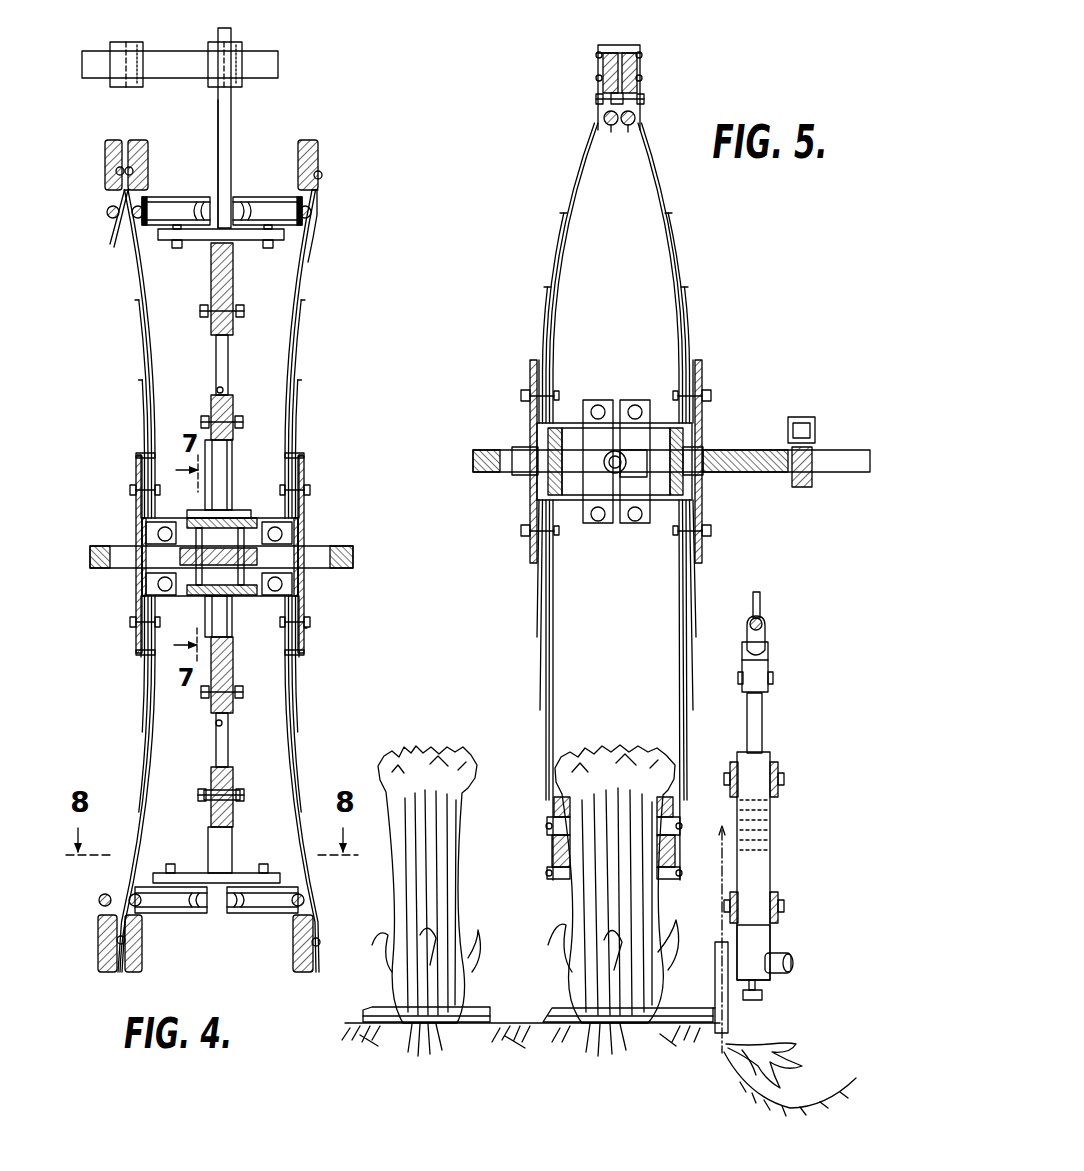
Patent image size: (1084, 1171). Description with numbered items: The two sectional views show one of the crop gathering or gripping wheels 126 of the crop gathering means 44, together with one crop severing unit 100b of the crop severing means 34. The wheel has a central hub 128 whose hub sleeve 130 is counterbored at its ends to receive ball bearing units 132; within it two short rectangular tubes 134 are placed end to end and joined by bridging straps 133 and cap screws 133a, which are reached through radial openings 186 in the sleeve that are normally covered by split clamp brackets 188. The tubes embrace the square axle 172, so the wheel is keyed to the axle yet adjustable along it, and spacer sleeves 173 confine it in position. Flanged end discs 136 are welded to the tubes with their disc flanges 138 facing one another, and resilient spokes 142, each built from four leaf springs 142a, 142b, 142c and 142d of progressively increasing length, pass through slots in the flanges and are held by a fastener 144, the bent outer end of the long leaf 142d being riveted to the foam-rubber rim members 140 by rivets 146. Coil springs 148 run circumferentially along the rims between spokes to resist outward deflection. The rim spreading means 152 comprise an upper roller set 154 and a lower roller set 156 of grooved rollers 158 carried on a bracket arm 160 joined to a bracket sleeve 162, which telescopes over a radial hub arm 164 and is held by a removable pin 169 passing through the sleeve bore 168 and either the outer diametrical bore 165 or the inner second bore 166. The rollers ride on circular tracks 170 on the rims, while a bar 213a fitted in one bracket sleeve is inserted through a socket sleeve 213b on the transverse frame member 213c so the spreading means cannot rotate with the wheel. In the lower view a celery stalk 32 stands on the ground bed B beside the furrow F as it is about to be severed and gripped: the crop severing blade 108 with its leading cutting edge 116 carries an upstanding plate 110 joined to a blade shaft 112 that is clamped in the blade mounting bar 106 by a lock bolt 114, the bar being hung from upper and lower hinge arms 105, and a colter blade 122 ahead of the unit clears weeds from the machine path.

In FIG. 5, the celery plant 32 is at (560, 898).
In FIG. 5, the crop severing means 34 is at (496, 1032).
In FIG. 4, the crop gathering means 44 is at (222, 540).
In FIG. 5, the crop gathering means 44 is at (603, 573).
In FIG. 5, the crop severing unit 100b is at (773, 822).
In FIG. 5, the hinge arms 105 is at (780, 762).
In FIG. 5, the blade mounting bar 106 is at (762, 938).
In FIG. 5, the crop severing blade 108 is at (372, 1007).
In FIG. 5, the upstanding plate 110 is at (729, 1012).
In FIG. 5, the blade shaft 112 is at (796, 963).
In FIG. 5, the lock bolt 114 is at (764, 995).
In FIG. 5, the leading cutting edge 116 is at (380, 1036).
In FIG. 5, the colter blade 122 is at (718, 1042).
In FIG. 4, the crop gathering wheel 126 is at (236, 573).
In FIG. 5, the crop gathering wheel 126 is at (629, 455).
In FIG. 4, the central hub 128 is at (244, 506).
In FIG. 5, the central hub 128 is at (570, 423).
In FIG. 4, the hub sleeve 130 is at (155, 524).
In FIG. 5, the hub sleeve 130 is at (572, 502).
In FIG. 4, the ball bearing units 132 is at (150, 574).
In FIG. 5, the ball bearing units 132 is at (674, 500).
In FIG. 4, the bridging straps 133 is at (240, 590).
In FIG. 4, the cap screws 133a is at (180, 590).
In FIG. 4, the axial tube 134 is at (301, 530).
In FIG. 5, the axial tube 134 is at (692, 478).
In FIG. 4, the end discs 136 is at (136, 467).
In FIG. 5, the end discs 136 is at (702, 420).
In FIG. 4, the disc flanges 138 is at (152, 450).
In FIG. 4, the resilient rim members 140 is at (112, 140).
In FIG. 5, the resilient rim members 140 is at (630, 70).
In FIG. 4, the resilient spokes 142 is at (136, 328).
In FIG. 5, the resilient spokes 142 is at (560, 220).
In FIG. 4, the leaf spring 142a is at (294, 432).
In FIG. 4, the leaf spring 142b is at (300, 352).
In FIG. 4, the leaf spring 142c is at (306, 268).
In FIG. 4, the long leaf spring 142d is at (320, 196).
In FIG. 5, the long leaf spring 142d is at (636, 112).
In FIG. 4, the fastener 144 is at (307, 627).
In FIG. 5, the rivets 146 is at (603, 66).
In FIG. 4, the coil springs 148 is at (321, 172).
In FIG. 4, the rim spreading means 152 is at (237, 96).
In FIG. 4, the upper roller set 154 is at (178, 197).
In FIG. 4, the lower roller set 156 is at (266, 914).
In FIG. 4, the rim spreading rollers 158 is at (262, 197).
In FIG. 4, the bracket arm 160 is at (252, 241).
In FIG. 4, the bracket sleeve 162 is at (212, 288).
In FIG. 4, the hub arm 164 is at (233, 440).
In FIG. 4, the diametrical bore 165 is at (215, 340).
In FIG. 4, the second diametrical bore 166 is at (224, 388).
In FIG. 4, the sleeve bore 168 is at (204, 798).
In FIG. 4, the removable pin 169 is at (238, 312).
In FIG. 4, the circular tracks 170 is at (312, 215).
In FIG. 5, the circular tracks 170 is at (628, 126).
In FIG. 4, the axle 172 is at (352, 555).
In FIG. 5, the axle 172 is at (840, 450).
In FIG. 4, the spacer sleeves 173 is at (340, 547).
In FIG. 5, the spacer sleeves 173 is at (742, 449).
In FIG. 4, the radial openings 186 is at (202, 513).
In FIG. 4, the split clamp brackets 188 is at (198, 590).
In FIG. 5, the split clamp brackets 188 is at (625, 400).
In FIG. 4, the bar 213a is at (231, 175).
In FIG. 4, the socket sleeves 213b is at (243, 48).
In FIG. 4, the transverse frame member 213c is at (170, 62).
In FIG. 5, the plant bed B is at (700, 1034).
In FIG. 5, the furrow F is at (806, 1098).